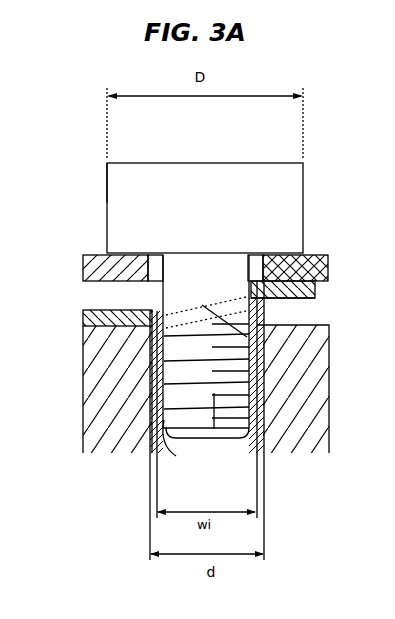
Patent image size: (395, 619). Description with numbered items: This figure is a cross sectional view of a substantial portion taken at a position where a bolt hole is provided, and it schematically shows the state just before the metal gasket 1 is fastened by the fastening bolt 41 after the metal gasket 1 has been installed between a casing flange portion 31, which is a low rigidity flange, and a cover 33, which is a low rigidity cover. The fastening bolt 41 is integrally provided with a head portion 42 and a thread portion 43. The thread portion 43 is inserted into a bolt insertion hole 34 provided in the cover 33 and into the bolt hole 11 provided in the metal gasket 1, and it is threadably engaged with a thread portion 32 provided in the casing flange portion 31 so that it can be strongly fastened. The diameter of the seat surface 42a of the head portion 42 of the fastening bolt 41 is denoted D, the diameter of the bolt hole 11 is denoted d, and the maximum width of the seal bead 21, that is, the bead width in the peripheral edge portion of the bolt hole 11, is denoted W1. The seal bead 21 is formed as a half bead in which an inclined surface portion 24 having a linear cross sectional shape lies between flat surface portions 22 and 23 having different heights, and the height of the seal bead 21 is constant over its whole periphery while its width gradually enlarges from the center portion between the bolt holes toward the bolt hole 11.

The metal gasket 1 is at (75, 309).
The bolt hole 11 is at (246, 290).
The seal bead 21 is at (136, 295).
The flat surface portion 22 is at (92, 353).
The flat surface portion 23 is at (307, 291).
The inclined surface portion 24 is at (323, 416).
The casing flange portion 31 is at (78, 410).
The thread portion 32 is at (164, 473).
The cover 33 is at (75, 259).
The bolt insertion hole 34 is at (322, 270).
The fastening bolt 41 is at (104, 173).
The head portion 42 is at (283, 204).
The seat surface 42a is at (289, 255).
The thread portion 43 is at (210, 428).